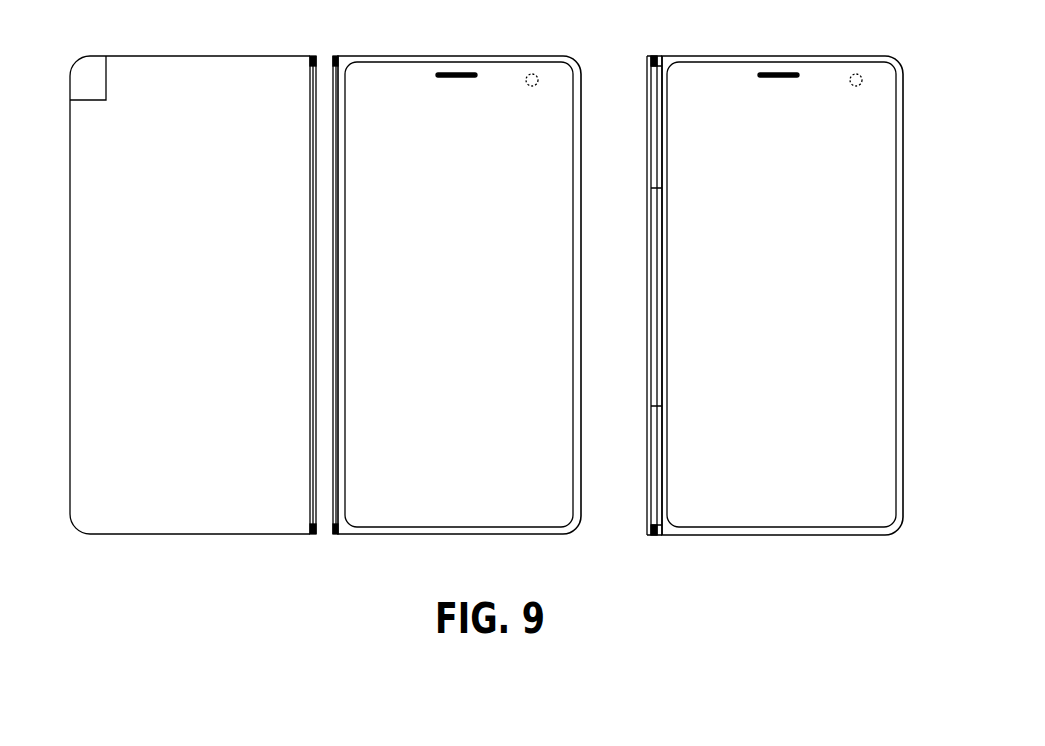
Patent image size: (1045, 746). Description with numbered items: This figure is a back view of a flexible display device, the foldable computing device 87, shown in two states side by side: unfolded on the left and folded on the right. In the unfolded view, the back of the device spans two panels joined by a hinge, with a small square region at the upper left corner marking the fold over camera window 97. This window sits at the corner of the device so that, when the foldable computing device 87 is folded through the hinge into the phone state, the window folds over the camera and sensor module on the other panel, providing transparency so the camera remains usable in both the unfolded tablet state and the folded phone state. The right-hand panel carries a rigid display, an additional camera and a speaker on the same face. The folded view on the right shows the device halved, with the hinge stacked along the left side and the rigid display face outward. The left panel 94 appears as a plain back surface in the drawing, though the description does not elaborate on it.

The foldable computing device 87 is at (130, 28).
The first panel / cover 94 is at (70, 370).
The fold over camera window 97 is at (90, 80).